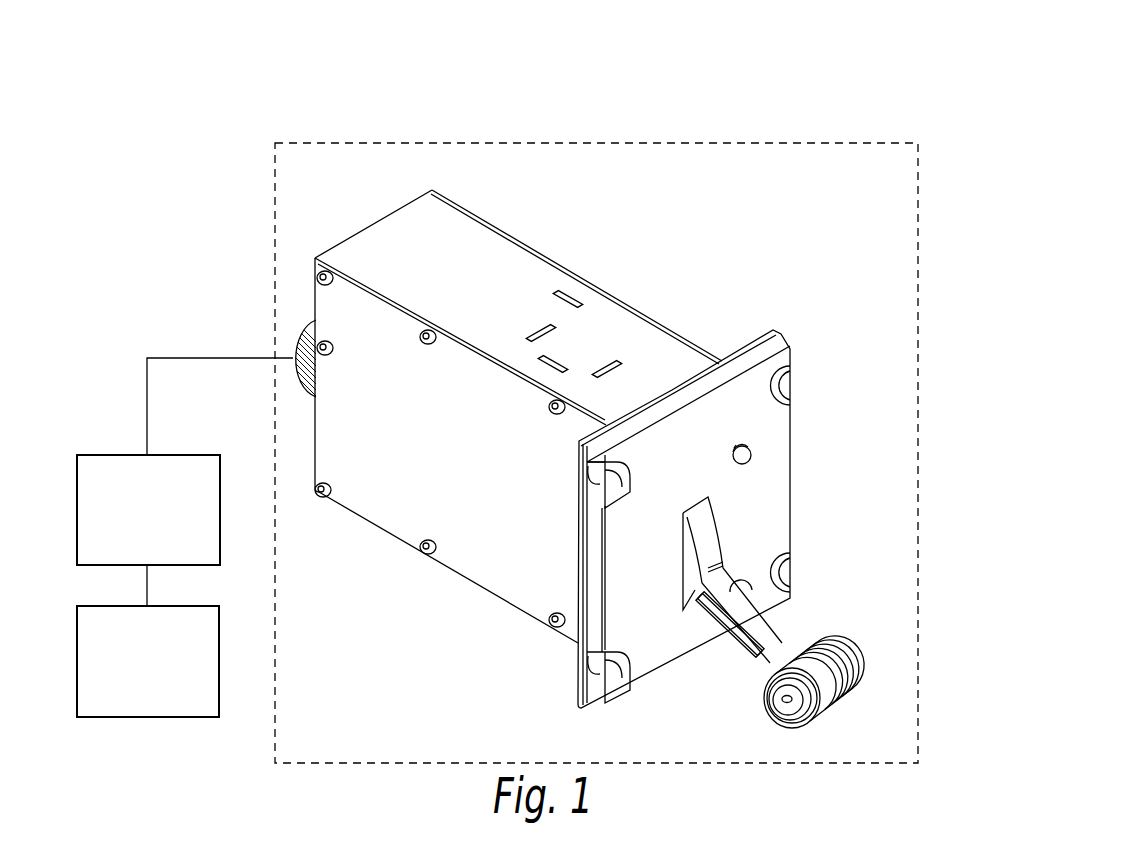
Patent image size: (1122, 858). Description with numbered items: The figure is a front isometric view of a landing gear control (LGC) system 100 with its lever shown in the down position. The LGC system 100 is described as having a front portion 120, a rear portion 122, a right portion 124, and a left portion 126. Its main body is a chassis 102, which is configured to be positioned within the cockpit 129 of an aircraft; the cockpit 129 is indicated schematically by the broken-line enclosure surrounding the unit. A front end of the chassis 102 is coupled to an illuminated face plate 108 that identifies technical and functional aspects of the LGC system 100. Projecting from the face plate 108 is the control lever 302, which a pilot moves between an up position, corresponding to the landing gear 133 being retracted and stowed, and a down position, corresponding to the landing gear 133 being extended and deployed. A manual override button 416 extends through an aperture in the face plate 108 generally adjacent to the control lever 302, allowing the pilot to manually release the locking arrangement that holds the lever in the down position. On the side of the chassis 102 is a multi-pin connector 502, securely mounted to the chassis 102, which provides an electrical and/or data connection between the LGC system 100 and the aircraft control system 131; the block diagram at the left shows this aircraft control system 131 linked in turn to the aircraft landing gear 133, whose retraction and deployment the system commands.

The LGC system 100 is at (210, 257).
The chassis 102 is at (498, 403).
The illuminated face plate 108 is at (717, 519).
The front portion 120 is at (803, 612).
The rear portion 122 is at (305, 237).
The right portion 124 is at (675, 325).
The left portion 126 is at (370, 489).
The cockpit 129 is at (755, 143).
The aircraft control system 131 is at (110, 454).
The aircraft landing gear 133 is at (110, 717).
The control lever 302 is at (737, 647).
The manual override button 416 is at (750, 438).
The multi-pin connector 502 is at (293, 350).